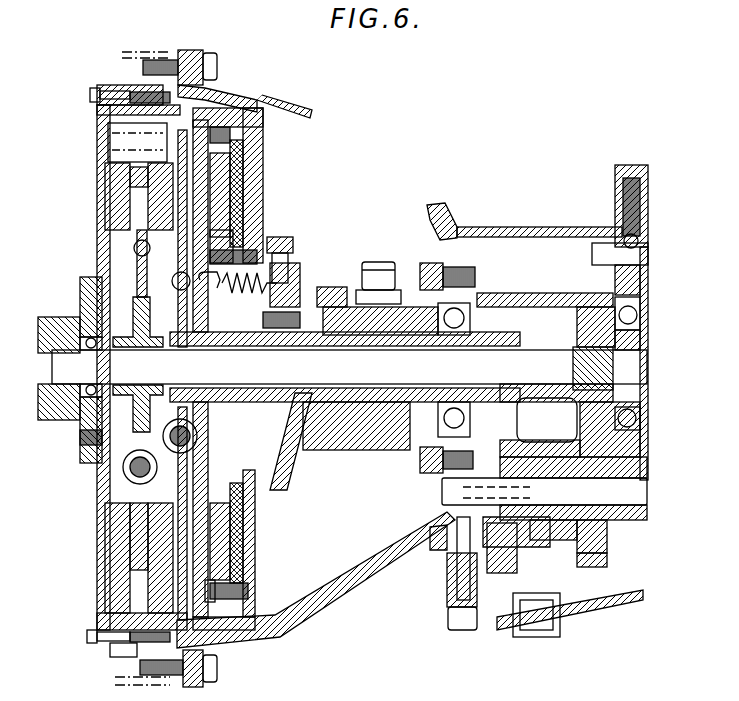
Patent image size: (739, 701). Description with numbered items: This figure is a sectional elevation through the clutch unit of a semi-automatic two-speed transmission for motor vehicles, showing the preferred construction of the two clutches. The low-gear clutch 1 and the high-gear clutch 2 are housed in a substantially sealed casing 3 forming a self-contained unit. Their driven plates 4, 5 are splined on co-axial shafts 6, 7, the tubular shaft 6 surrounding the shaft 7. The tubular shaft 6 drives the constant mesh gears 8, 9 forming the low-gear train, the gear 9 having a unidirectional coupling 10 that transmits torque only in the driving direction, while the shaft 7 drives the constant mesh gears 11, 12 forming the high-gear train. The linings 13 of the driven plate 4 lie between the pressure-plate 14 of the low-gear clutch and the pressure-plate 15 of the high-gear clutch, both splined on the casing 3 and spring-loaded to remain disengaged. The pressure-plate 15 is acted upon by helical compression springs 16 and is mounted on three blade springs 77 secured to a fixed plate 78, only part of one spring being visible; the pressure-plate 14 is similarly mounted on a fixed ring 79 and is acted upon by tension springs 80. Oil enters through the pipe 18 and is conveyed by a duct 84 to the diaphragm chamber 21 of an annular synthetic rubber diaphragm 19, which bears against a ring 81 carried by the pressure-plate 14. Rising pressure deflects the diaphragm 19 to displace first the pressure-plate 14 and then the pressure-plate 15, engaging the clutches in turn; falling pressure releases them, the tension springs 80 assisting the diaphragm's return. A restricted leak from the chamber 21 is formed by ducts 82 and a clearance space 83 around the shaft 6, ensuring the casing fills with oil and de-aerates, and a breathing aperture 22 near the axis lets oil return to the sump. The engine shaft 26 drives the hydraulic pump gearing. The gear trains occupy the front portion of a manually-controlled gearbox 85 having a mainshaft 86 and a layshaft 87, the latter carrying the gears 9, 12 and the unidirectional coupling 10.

The low-gear clutch 1 is at (208, 98).
The high-gear clutch 2 is at (118, 172).
The casing 3 is at (140, 93).
The driven plate 4 is at (178, 248).
The driven plate 5 is at (147, 283).
The tubular shaft 6 is at (262, 352).
The shaft 7 is at (229, 362).
The constant mesh gear 8 is at (500, 323).
The constant mesh gear 9 is at (516, 555).
The unidirectional coupling 10 is at (540, 530).
The constant mesh gear 11 is at (603, 269).
The constant mesh gear 12 is at (600, 555).
The linings 13 is at (180, 203).
The pressure-plate 14 is at (437, 210).
The pressure-plate 15 is at (165, 193).
The helical compression springs 16 is at (108, 135).
The pipe 18 is at (368, 262).
The annular diaphragm 19 is at (235, 160).
The diaphragm chamber 21 is at (243, 217).
The breathing aperture 22 is at (52, 415).
The engine shaft 26 is at (48, 322).
The blade springs 77 is at (135, 597).
The fixed plate 78 is at (115, 513).
The fixed ring 79 is at (245, 588).
The tension springs 80 is at (230, 292).
The ring 81 is at (222, 183).
The ducts 82 is at (337, 290).
The clearance space 83 is at (297, 335).
The duct 84 is at (290, 445).
The gearbox 85 is at (532, 230).
The mainshaft 86 is at (590, 368).
The layshaft 87 is at (615, 493).